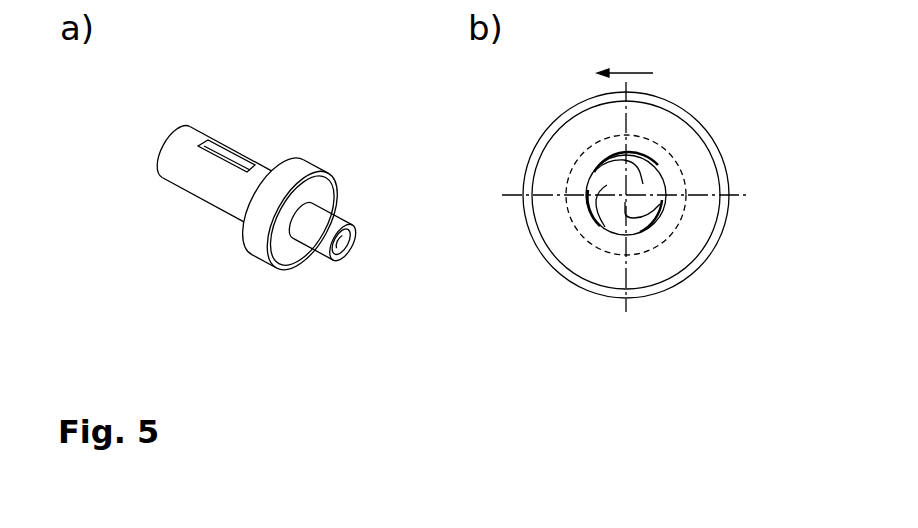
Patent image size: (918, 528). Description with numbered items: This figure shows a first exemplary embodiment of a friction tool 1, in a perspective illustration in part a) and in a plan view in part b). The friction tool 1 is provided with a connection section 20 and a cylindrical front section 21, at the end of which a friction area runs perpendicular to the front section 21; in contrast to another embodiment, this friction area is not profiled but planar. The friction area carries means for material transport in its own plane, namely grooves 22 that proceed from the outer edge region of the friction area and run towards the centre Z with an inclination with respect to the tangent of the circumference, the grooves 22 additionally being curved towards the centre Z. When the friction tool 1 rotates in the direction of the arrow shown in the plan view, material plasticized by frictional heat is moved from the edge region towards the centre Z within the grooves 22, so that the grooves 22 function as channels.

The friction tool 1 is at (432, 204).
The connection section 20 is at (225, 147).
The cylindrical front section 21 is at (322, 231).
The grooves 22 is at (595, 207).
The centre Z is at (626, 195).